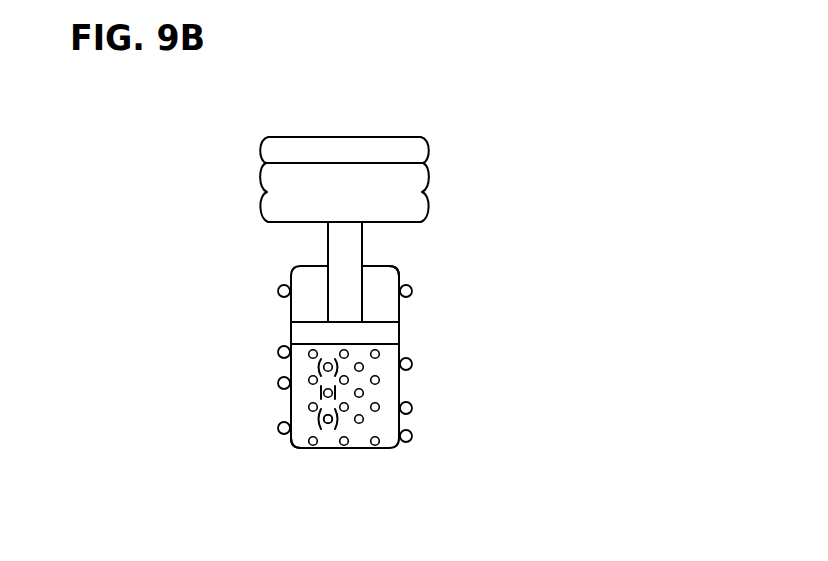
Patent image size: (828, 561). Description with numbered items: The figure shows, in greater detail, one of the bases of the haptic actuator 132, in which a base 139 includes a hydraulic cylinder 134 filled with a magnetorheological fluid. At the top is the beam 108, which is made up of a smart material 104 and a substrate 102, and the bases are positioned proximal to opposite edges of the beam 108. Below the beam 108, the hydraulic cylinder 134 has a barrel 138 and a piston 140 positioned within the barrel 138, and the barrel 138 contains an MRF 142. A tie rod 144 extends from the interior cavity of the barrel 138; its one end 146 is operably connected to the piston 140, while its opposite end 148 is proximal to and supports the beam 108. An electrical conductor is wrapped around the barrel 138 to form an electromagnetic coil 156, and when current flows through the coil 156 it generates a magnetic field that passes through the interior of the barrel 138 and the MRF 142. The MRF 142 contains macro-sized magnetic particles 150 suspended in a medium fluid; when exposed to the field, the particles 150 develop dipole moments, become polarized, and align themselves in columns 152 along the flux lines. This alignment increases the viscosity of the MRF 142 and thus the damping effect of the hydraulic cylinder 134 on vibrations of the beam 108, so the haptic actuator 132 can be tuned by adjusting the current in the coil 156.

The substrate 102 is at (262, 200).
The smart material 104 is at (261, 152).
The beam 108 is at (342, 138).
The haptic actuator 132 is at (606, 105).
The hydraulic cylinder 134 is at (291, 404).
The barrel 138 is at (400, 286).
The base 139 is at (351, 450).
The piston 140 is at (377, 320).
The MRF 142 is at (392, 383).
The tie rod 144 is at (362, 242).
The one end 146 is at (323, 320).
The opposite end 148 is at (328, 224).
The magnetic particles 150 is at (385, 419).
The columns 152 is at (321, 413).
The electromagnetic coil 156 is at (412, 364).